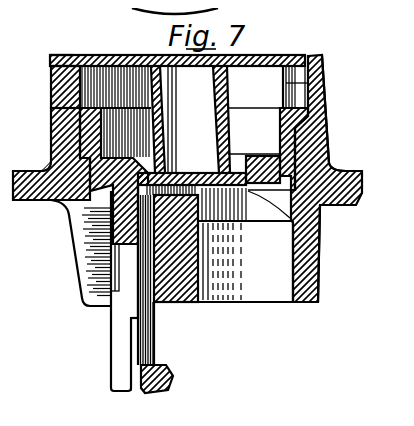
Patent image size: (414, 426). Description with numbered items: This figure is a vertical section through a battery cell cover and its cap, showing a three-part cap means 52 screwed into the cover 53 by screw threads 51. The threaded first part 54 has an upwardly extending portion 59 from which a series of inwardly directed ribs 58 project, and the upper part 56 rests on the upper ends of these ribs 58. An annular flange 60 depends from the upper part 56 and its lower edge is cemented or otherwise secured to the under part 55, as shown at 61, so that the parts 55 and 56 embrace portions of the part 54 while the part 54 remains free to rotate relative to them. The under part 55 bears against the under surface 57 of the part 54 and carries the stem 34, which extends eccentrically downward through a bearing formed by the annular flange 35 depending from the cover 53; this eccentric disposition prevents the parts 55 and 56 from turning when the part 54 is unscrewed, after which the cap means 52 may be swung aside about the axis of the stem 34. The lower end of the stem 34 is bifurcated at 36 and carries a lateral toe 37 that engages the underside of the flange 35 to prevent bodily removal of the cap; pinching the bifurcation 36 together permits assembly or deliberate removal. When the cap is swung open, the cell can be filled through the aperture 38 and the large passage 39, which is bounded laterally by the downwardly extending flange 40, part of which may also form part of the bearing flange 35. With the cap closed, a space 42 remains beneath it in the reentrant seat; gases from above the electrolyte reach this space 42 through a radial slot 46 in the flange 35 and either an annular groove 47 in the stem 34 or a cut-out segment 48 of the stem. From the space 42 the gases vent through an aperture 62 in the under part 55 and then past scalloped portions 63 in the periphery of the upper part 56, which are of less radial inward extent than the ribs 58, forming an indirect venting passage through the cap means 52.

The stem 34 is at (105, 325).
The flange 35 is at (172, 296).
The bifurcation 36 is at (127, 378).
The toe 37 is at (164, 368).
The aperture 38 is at (243, 211).
The passage 39 is at (279, 294).
The flange 40 is at (305, 257).
The space 42 is at (224, 244).
The radial slot 46 is at (70, 238).
The annular groove 47 is at (86, 212).
The cut-out segment 48 is at (110, 262).
The screw threads 51 is at (302, 134).
The cap means 52 is at (326, 50).
The cover 53 is at (345, 158).
The part 54 is at (44, 106).
The under part 55 is at (290, 186).
The upper part 56 is at (266, 47).
The under surface 57 is at (43, 156).
The ribs 58 is at (63, 71).
The upwardly extending portion 59 is at (302, 87).
The annular flange 60 is at (222, 128).
The cemented joint 61 is at (206, 163).
The aperture 62 is at (313, 221).
The scalloped portions 63 is at (61, 47).